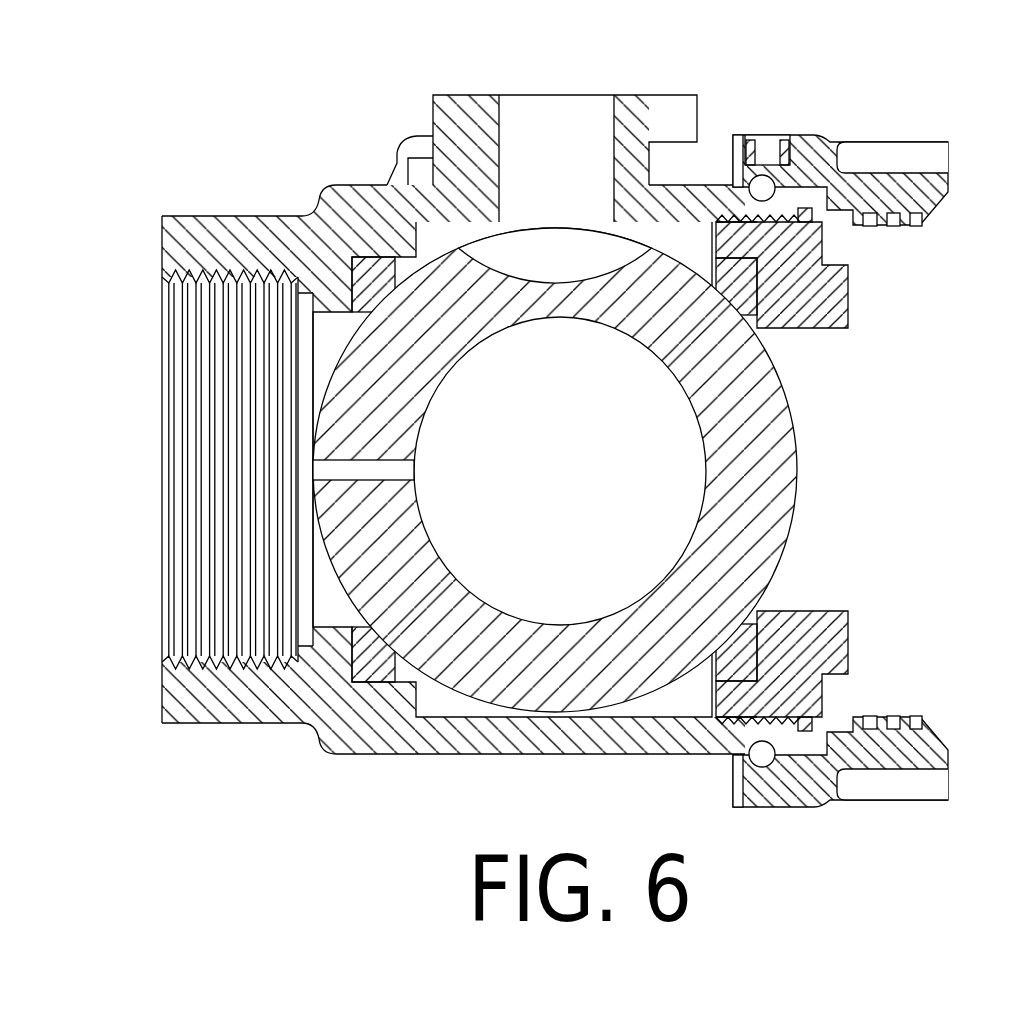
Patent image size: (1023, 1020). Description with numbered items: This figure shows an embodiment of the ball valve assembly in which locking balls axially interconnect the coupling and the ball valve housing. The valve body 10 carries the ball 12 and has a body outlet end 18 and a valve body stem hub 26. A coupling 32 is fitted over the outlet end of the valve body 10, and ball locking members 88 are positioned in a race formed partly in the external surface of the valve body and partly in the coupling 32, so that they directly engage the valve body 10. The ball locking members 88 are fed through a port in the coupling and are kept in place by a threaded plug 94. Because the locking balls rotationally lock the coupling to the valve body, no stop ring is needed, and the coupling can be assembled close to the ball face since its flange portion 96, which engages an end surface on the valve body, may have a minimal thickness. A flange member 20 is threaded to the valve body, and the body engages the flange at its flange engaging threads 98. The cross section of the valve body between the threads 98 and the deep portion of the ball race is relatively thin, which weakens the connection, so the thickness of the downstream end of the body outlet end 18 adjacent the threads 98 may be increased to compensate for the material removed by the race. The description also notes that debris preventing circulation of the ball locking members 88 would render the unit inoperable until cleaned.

The ball valve body 10 is at (355, 207).
The ball 12 is at (542, 690).
The body outlet end 18 is at (676, 210).
The flange member 20 is at (820, 300).
The valve body stem hub 26 is at (624, 128).
The coupling 32 is at (920, 197).
The ball locking members 88 is at (765, 185).
The threaded plug 94 is at (758, 160).
The flange portion 96 is at (822, 728).
The flange engaging threads 98 is at (770, 715).